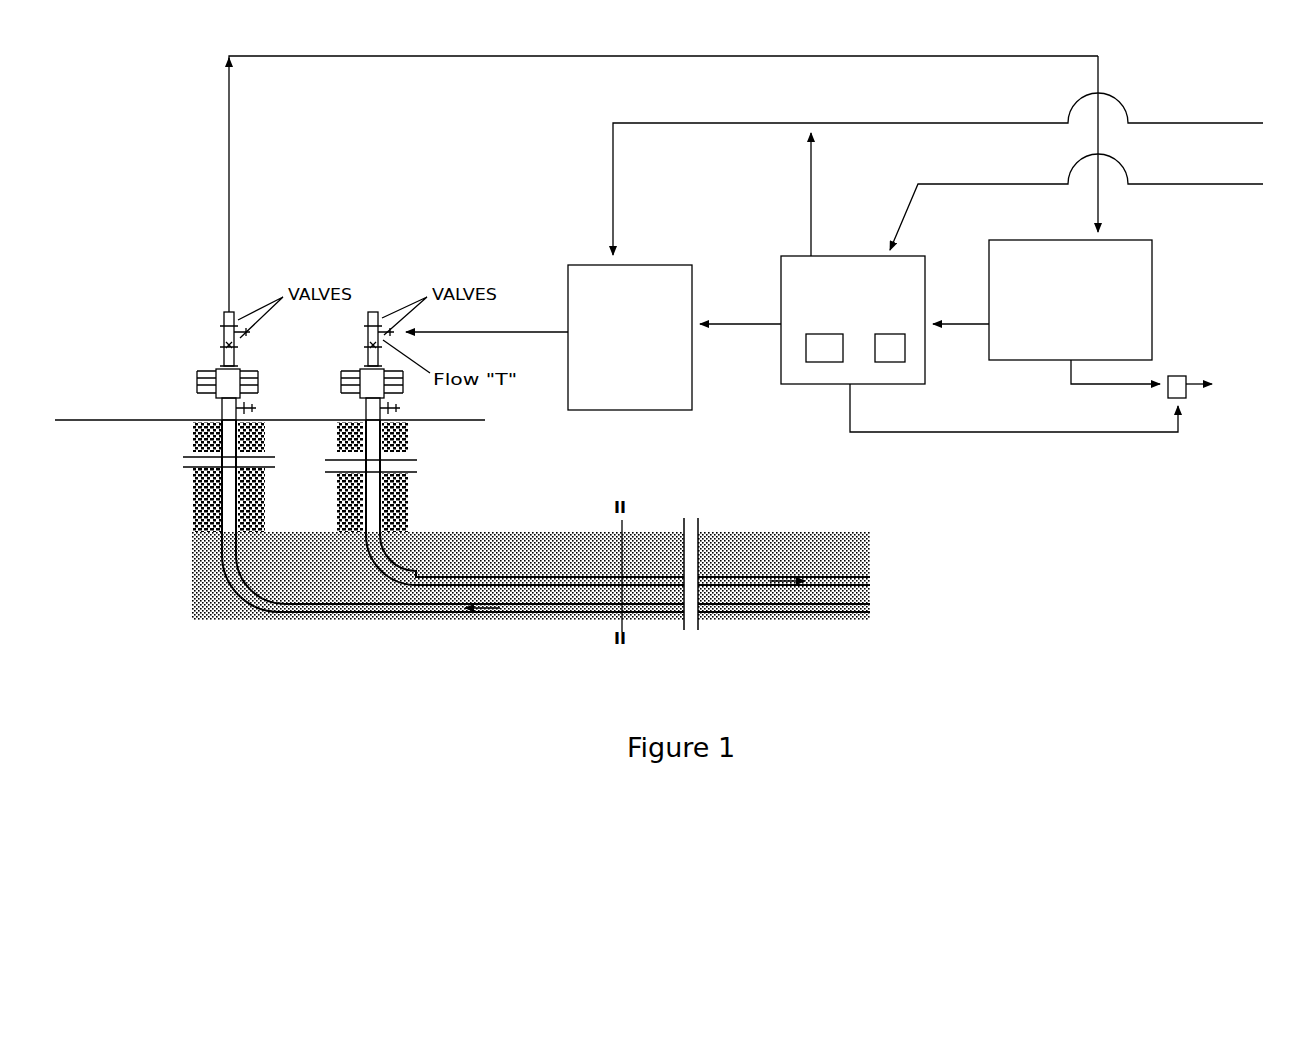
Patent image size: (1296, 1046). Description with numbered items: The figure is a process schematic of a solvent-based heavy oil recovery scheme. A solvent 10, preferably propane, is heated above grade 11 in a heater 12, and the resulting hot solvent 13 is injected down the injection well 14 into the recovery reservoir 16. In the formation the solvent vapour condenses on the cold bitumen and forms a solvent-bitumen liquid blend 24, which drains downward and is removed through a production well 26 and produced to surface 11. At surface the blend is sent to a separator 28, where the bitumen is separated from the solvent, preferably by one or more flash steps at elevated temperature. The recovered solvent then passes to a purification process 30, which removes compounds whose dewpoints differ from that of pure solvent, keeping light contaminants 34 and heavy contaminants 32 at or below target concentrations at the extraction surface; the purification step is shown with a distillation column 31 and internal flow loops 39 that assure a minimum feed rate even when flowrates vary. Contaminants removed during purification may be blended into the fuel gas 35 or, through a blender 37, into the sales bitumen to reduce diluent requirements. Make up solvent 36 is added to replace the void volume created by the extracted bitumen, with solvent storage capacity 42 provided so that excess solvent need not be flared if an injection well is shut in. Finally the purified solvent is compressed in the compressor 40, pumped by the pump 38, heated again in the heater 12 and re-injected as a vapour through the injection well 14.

The grade 11 is at (663, 173).
The fuel gas 35 is at (916, 174).
The light contaminants 34 is at (795, 194).
The make up solvent 36 is at (1076, 202).
The solvent storage capacity 42 is at (1190, 144).
The solvent 10 is at (720, 318).
The heater 12 is at (630, 337).
The pump 38 is at (630, 337).
The compressor 40 is at (630, 337).
The solvent purification process 30 is at (845, 353).
The distillation column 31 is at (773, 405).
The internal flow loops 39 is at (927, 392).
The separator 28 is at (1042, 300).
The blender 37 is at (1180, 372).
The heavy contaminants 32 is at (1014, 428).
The hot solvent 13 is at (487, 338).
The recovery reservoir 16 is at (790, 505).
The injection well 14 is at (870, 578).
The production well 26 is at (820, 608).
The solvent-bitumen liquid blend 24 is at (525, 606).